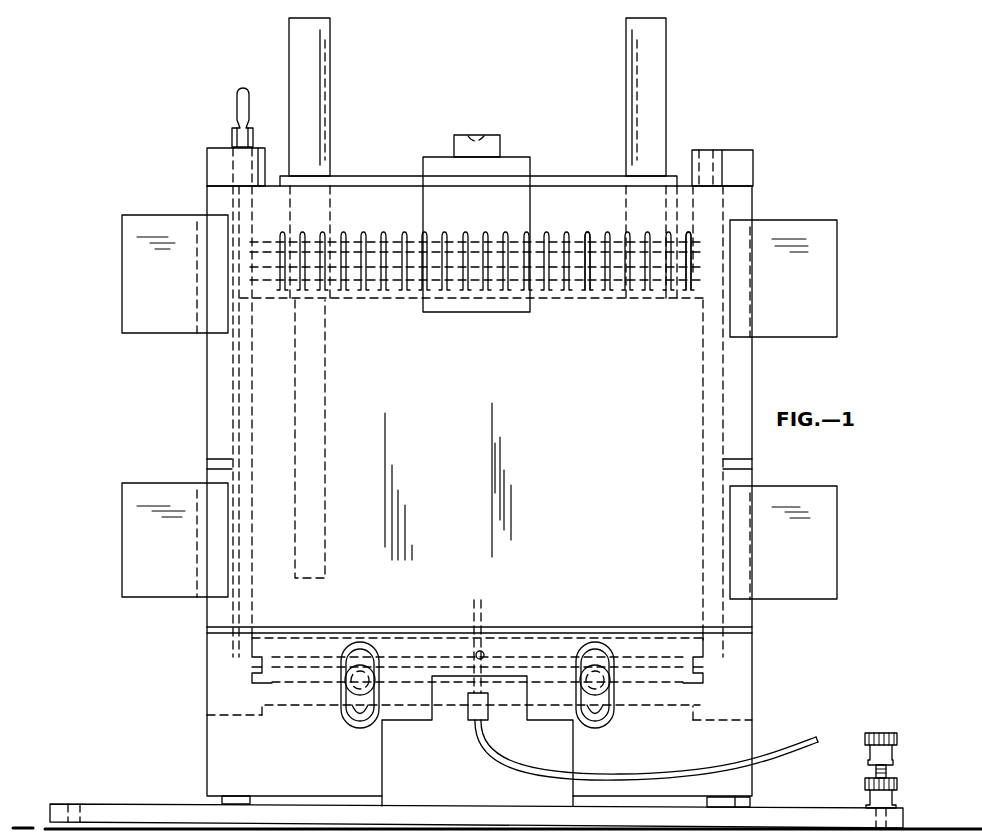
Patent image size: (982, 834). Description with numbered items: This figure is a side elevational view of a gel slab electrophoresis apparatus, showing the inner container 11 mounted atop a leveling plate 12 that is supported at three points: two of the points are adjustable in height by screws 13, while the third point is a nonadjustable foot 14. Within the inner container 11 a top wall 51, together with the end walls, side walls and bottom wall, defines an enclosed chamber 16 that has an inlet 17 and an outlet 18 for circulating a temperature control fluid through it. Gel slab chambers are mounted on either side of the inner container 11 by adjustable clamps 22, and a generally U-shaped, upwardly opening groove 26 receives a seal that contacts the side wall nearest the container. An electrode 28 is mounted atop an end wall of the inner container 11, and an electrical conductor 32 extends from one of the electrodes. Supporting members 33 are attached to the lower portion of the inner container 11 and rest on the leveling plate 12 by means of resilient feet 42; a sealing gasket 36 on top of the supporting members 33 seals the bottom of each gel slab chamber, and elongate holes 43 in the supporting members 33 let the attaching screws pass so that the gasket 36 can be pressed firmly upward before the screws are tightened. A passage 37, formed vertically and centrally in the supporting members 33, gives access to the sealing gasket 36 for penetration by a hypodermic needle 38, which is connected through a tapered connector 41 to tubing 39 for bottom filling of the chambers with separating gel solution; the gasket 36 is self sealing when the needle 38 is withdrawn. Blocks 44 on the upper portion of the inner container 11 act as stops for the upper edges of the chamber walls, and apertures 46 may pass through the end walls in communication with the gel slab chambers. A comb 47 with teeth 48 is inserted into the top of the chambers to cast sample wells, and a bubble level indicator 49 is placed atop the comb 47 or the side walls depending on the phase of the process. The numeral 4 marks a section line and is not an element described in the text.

The inner container 11 is at (693, 128).
The leveling plate 12 is at (782, 808).
The screws 13 is at (884, 733).
The nonadjustable foot 14 is at (47, 826).
The enclosed chamber 16 is at (526, 437).
The inlet 17 is at (330, 42).
The outlet 18 is at (667, 46).
The adjustable clamps 22 is at (122, 232).
The groove 26 is at (684, 295).
The electrode 28 is at (236, 106).
The electrical conductor 32 is at (240, 660).
The supporting members 33 is at (207, 748).
The sealing gasket 36 is at (752, 630).
The passage 37 is at (486, 656).
The hypodermic needle 38 is at (480, 598).
The tubing 39 is at (772, 746).
The tapered connector 41 is at (468, 715).
The resilient feet 42 is at (222, 799).
The elongate holes 43 is at (345, 712).
The blocks 44 is at (207, 163).
The apertures 46 is at (226, 456).
The comb 47 is at (364, 176).
The teeth 48 is at (386, 275).
The bubble level indicator 49 is at (491, 135).
The top wall 51 is at (593, 302).
The section line 4- 4 is at (197, 333).